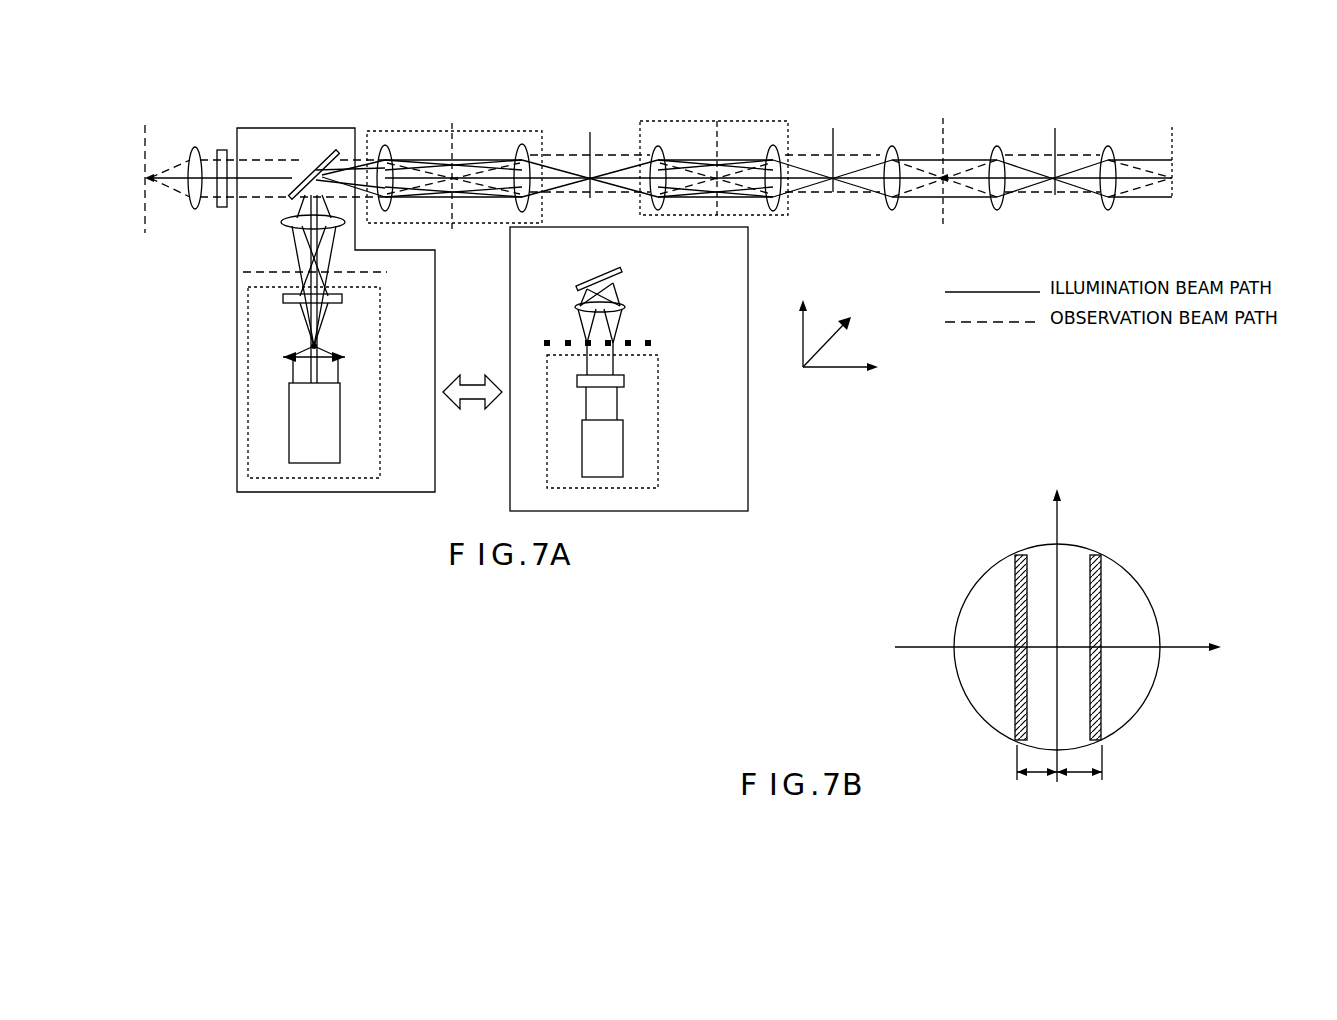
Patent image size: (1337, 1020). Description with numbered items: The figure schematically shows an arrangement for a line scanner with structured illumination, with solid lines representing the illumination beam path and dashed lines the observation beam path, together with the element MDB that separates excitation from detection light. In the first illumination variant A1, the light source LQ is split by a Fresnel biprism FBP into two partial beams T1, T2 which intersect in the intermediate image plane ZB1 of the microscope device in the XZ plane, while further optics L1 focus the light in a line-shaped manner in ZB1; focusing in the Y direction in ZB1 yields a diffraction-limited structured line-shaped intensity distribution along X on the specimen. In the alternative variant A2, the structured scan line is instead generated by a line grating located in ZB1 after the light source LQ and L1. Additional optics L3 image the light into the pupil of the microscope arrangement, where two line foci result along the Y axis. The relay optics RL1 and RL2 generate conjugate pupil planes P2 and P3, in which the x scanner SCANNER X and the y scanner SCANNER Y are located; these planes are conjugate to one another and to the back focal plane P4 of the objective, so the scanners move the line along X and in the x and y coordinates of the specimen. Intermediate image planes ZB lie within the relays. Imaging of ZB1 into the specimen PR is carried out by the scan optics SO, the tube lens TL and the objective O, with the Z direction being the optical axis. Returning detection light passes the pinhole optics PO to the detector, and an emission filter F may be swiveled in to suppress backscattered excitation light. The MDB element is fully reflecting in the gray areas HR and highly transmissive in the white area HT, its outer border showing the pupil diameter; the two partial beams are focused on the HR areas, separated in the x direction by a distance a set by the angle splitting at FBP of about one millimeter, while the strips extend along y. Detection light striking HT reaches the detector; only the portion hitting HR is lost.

In FIG. 7A, the pinhole optics PO is at (193, 161).
In FIG. 7A, the emission filter F is at (222, 164).
In FIG. 7A, the additional optics L3 is at (439, 289).
In FIG. 7A, the intermediate image plane ZB1 is at (333, 271).
In FIG. 7A, the further optics L1 is at (465, 338).
In FIG. 7A, the first partial beam T1 is at (303, 329).
In FIG. 7A, the second partial beam T2 is at (327, 325).
In FIG. 7A, the Fresnel biprism FBP is at (335, 382).
In FIG. 7A, the light source LQ is at (456, 430).
In FIG. 7A, the arrangement variant with Fresnel biprism A1 is at (336, 310).
In FIG. 7A, the arrangement variant with line grating A2 is at (629, 369).
In FIG. 7A, the intermediate image plane ZB is at (660, 162).
In FIG. 7A, the first relay optics RL1 is at (453, 173).
In FIG. 7A, the second relay optics RL2 is at (715, 171).
In FIG. 7A, the pupil plane of the x scanner P2 is at (590, 148).
In FIG. 7A, the pupil plane of the y scanner P3 is at (833, 145).
In FIG. 7A, the back focal plane of the objective P4 is at (1052, 146).
In FIG. 7A, the scan optics SO is at (892, 154).
In FIG. 7A, the tube lens TL is at (997, 153).
In FIG. 7A, the objective O is at (1108, 151).
In FIG. 7A, the specimen PR is at (1172, 145).
In FIG. 7A, the x scanner SCANNER X is at (585, 75).
In FIG. 7A, the y scanner SCANNER Y is at (830, 72).
In FIG. 7A, the X direction X is at (803, 324).
In FIG. 7A, the Y direction Y is at (835, 335).
In FIG. 7A, the Z direction Z is at (848, 368).
In FIG. 7B, the fully reflecting areas HR is at (1000, 581).
In FIG. 7B, the highly transmissive area HT is at (994, 679).
In FIG. 7B, the distance a is at (1059, 772).
In FIG. 7B, the x coordinate x is at (1066, 647).
In FIG. 7B, the y coordinate y is at (1056, 626).